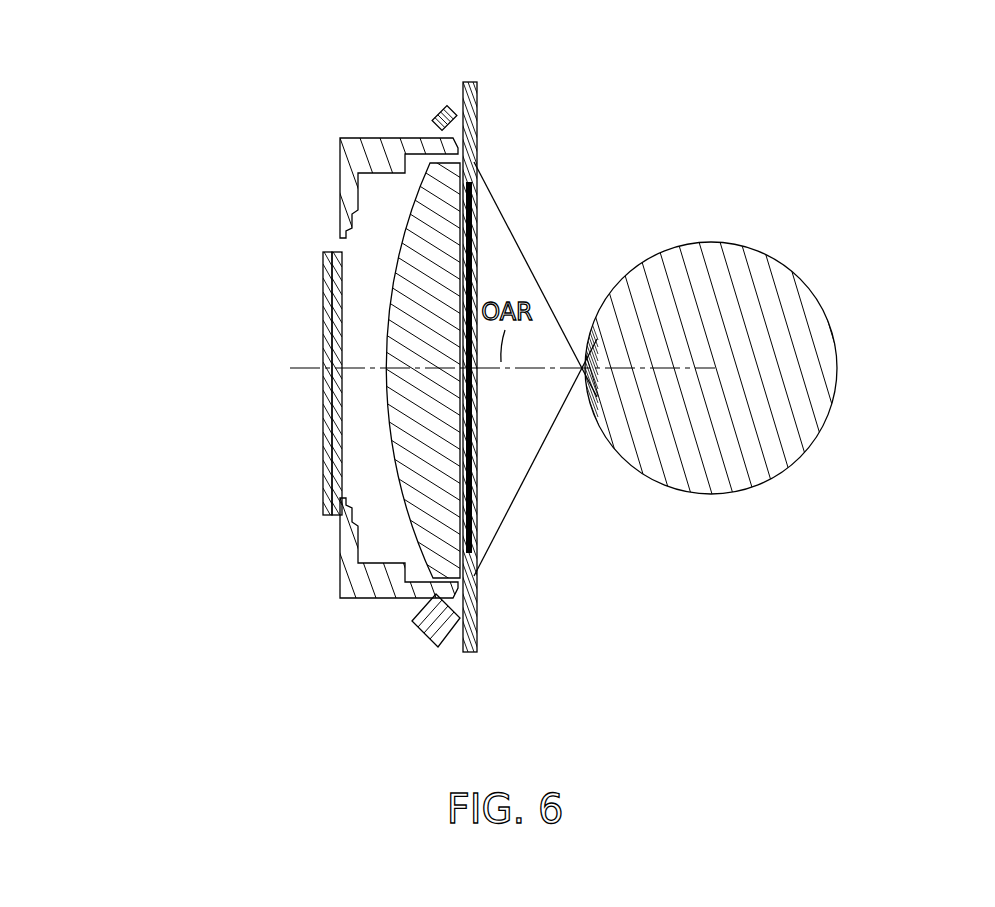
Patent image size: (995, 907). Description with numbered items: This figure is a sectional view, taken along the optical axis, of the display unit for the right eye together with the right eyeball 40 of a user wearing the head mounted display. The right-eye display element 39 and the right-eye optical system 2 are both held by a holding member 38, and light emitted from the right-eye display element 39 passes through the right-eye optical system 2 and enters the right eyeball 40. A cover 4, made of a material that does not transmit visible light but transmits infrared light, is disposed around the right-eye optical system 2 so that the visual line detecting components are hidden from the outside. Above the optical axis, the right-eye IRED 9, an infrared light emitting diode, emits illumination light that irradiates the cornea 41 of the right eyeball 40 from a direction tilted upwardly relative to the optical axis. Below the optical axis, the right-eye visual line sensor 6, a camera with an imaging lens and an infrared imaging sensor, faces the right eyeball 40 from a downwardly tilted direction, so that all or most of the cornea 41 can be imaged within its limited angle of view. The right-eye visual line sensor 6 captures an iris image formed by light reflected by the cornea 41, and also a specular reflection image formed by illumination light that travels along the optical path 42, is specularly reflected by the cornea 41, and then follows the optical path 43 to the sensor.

The right-eye optical system 2 is at (475, 226).
The cover 4 is at (477, 102).
The right-eye visual line sensor 6 is at (438, 647).
The right-eye IRED 9 is at (448, 106).
The holding member 38 is at (342, 596).
The right-eye display element 39 is at (323, 433).
The right eyeball 40 is at (700, 288).
The cornea 41 is at (582, 393).
The optical path 42 is at (537, 282).
The optical path 43 is at (541, 445).